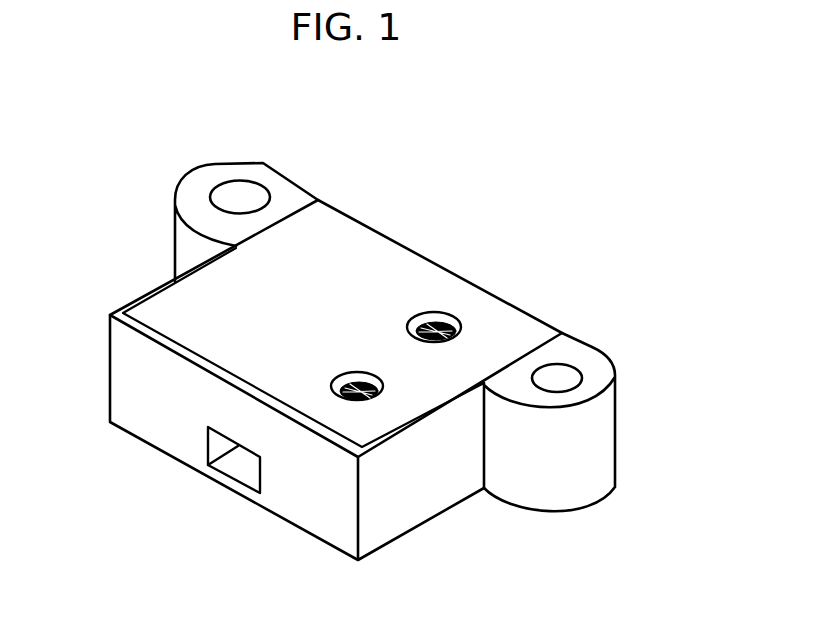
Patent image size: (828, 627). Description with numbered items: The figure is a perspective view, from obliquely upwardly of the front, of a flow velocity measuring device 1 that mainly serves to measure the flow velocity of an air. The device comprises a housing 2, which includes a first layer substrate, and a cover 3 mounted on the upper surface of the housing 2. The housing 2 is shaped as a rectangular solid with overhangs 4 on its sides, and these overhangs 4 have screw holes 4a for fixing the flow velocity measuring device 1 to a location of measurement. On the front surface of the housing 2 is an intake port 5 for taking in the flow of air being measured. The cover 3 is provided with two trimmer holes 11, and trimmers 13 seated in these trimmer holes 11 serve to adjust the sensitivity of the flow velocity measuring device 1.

The flow velocity measuring device 1 is at (115, 182).
The housing 2 is at (110, 358).
The cover 3 is at (373, 219).
The overhangs 4 is at (203, 177).
The screw holes 4a is at (255, 186).
The intake port 5 is at (228, 481).
The trimmer holes 11 is at (352, 372).
The trimmers 13 is at (380, 373).